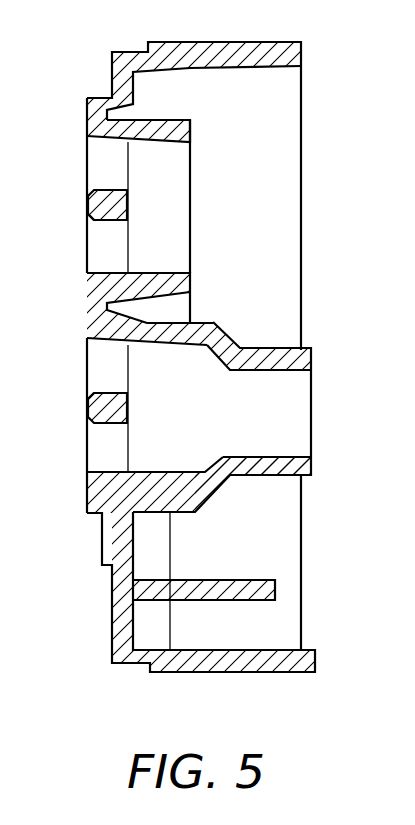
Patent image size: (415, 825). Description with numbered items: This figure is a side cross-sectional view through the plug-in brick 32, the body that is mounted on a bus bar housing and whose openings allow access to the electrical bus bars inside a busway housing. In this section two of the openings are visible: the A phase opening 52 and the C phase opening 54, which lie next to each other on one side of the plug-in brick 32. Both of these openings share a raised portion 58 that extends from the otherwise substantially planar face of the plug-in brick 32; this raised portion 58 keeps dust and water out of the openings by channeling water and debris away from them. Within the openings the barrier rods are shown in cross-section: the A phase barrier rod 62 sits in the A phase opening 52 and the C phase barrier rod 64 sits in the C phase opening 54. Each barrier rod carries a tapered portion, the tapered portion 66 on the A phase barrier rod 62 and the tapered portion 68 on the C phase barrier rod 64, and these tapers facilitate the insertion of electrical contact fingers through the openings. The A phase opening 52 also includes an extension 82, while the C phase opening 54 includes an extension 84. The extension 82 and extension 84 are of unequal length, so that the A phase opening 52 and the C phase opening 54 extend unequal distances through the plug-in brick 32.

The plug-in brick 32 is at (204, 42).
The extension 82 is at (187, 120).
The A phase opening 52 is at (88, 150).
The A phase barrier rod 62 is at (100, 205).
The tapered portion 66 is at (87, 219).
The raised portion 58 is at (90, 300).
The extension 84 is at (311, 350).
The tapered portion 68 is at (88, 395).
The C phase barrier rod 64 is at (97, 408).
The C phase opening 54 is at (93, 470).